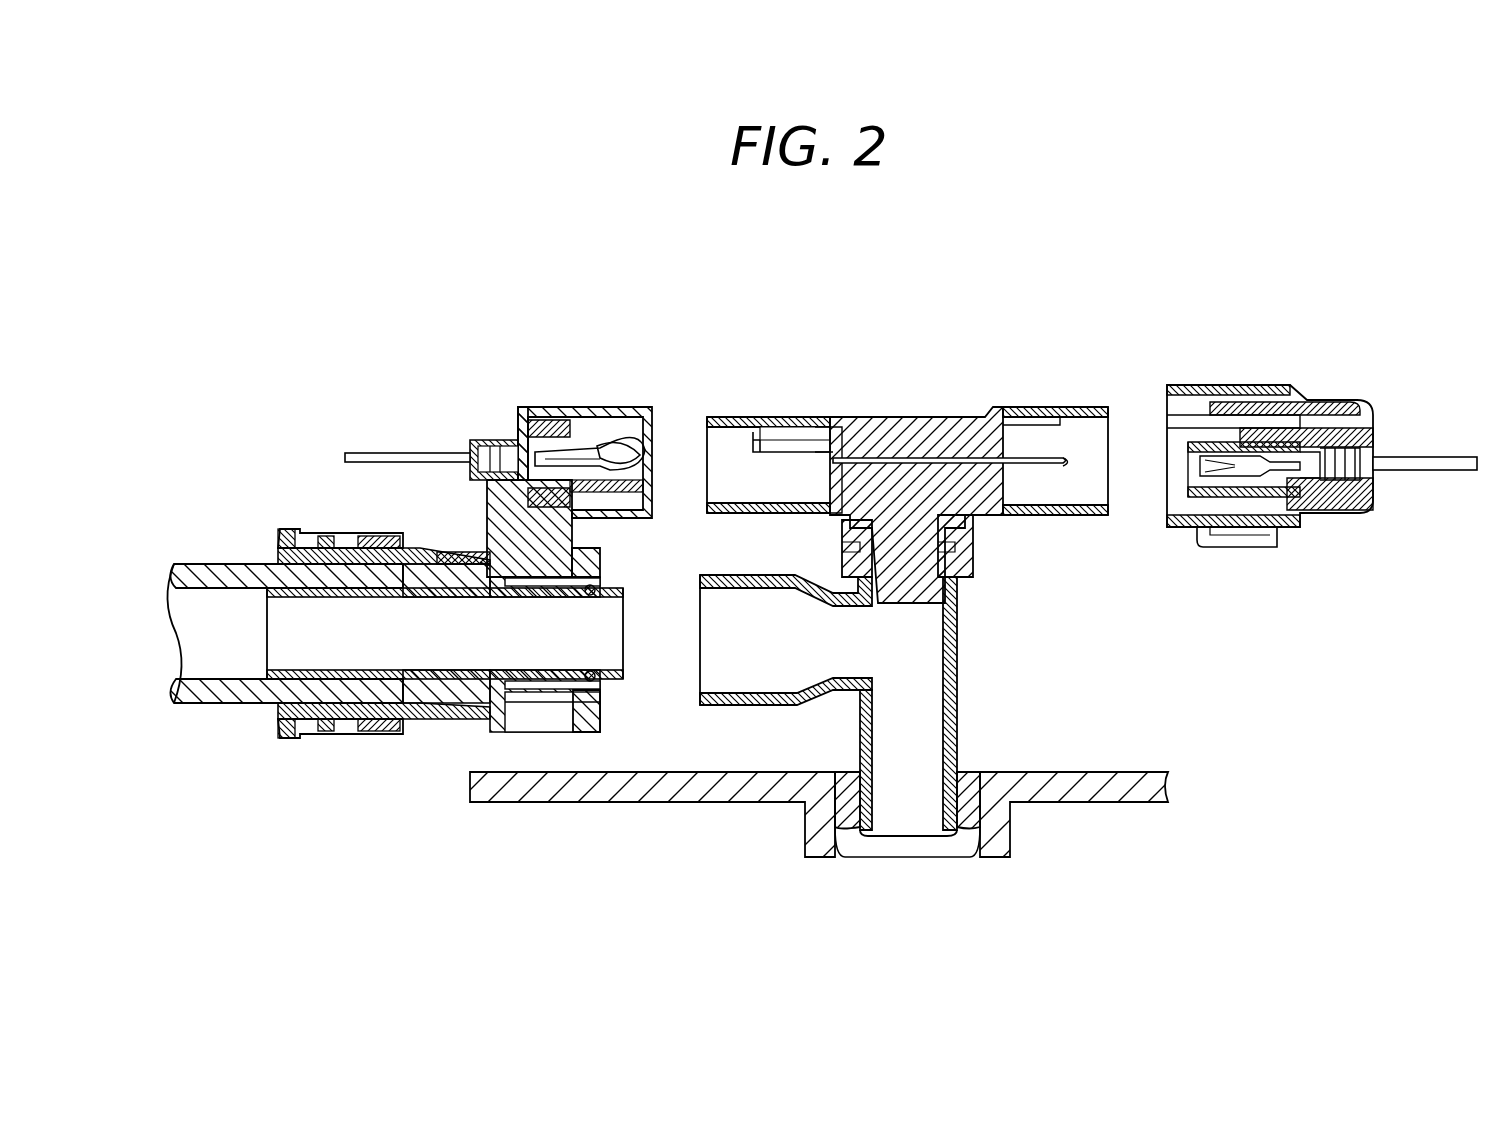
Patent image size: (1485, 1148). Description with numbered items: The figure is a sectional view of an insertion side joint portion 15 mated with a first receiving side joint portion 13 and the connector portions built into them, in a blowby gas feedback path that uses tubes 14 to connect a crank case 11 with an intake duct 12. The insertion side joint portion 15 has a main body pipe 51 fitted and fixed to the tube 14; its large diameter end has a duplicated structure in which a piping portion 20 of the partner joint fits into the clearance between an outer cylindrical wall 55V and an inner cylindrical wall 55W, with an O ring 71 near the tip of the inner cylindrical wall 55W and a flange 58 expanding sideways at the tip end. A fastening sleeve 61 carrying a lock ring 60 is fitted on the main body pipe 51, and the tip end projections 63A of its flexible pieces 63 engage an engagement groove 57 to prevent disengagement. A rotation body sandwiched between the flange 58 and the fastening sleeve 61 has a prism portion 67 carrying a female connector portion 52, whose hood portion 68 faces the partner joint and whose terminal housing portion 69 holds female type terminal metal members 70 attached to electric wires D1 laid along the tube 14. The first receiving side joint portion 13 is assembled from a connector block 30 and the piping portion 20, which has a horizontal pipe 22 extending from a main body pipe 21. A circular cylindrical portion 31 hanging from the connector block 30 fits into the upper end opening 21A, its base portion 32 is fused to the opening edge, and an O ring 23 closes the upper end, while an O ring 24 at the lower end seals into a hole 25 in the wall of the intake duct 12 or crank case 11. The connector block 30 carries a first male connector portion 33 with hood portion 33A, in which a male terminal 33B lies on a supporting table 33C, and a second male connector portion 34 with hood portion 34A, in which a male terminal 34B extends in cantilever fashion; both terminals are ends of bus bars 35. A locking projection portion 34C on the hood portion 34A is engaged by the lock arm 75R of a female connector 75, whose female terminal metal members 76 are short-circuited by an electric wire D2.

The crank case 11 is at (831, 816).
The intake duct 12 is at (1115, 803).
The first receiving side joint portion 13 is at (759, 283).
The tube 14 is at (216, 716).
The insertion side joint portion 15 is at (461, 297).
The piping portion 20 is at (1040, 738).
The main body pipe 21 is at (957, 698).
The upper end opening 21A is at (842, 548).
The horizontal pipe 22 is at (767, 706).
The O ring 23 is at (972, 575).
The O ring 24 is at (980, 800).
The hole 25 is at (860, 845).
The connector block 30 is at (1117, 300).
The circular cylindrical portion 31 is at (908, 545).
The base portion 32 is at (862, 523).
The first male connector portion 33 is at (698, 357).
The hood portion 33A is at (740, 419).
The male terminal 33B is at (787, 441).
The supporting table 33C is at (812, 430).
The second male connector portion 34 is at (1170, 357).
The hood portion 34A is at (1093, 414).
The male terminal 34B is at (1070, 462).
The locking projection portion 34C is at (1060, 416).
The bus bar 35 is at (955, 456).
The main body pipe 51 is at (428, 728).
The female connector portion 52 is at (515, 518).
The outer cylindrical wall 55V is at (566, 702).
The inner cylindrical wall 55W is at (537, 702).
The engagement groove 57 is at (468, 566).
The flange 58 is at (598, 554).
The lock ring 60 is at (372, 740).
The fastening sleeve 61 is at (287, 742).
The flexible piece 63 is at (400, 550).
The tip end projection 63A is at (445, 558).
The prism portion 67 is at (485, 568).
The hood portion 68 is at (590, 407).
The terminal housing portion 69 is at (549, 428).
The female type terminal metal member 70 is at (619, 455).
The O ring 71 is at (596, 702).
The female connector 75 is at (1333, 369).
The lock arm 75R is at (1272, 398).
The female terminal metal member 76 is at (1279, 460).
The electric wire D1 is at (393, 450).
The electric wire D2 is at (1420, 473).